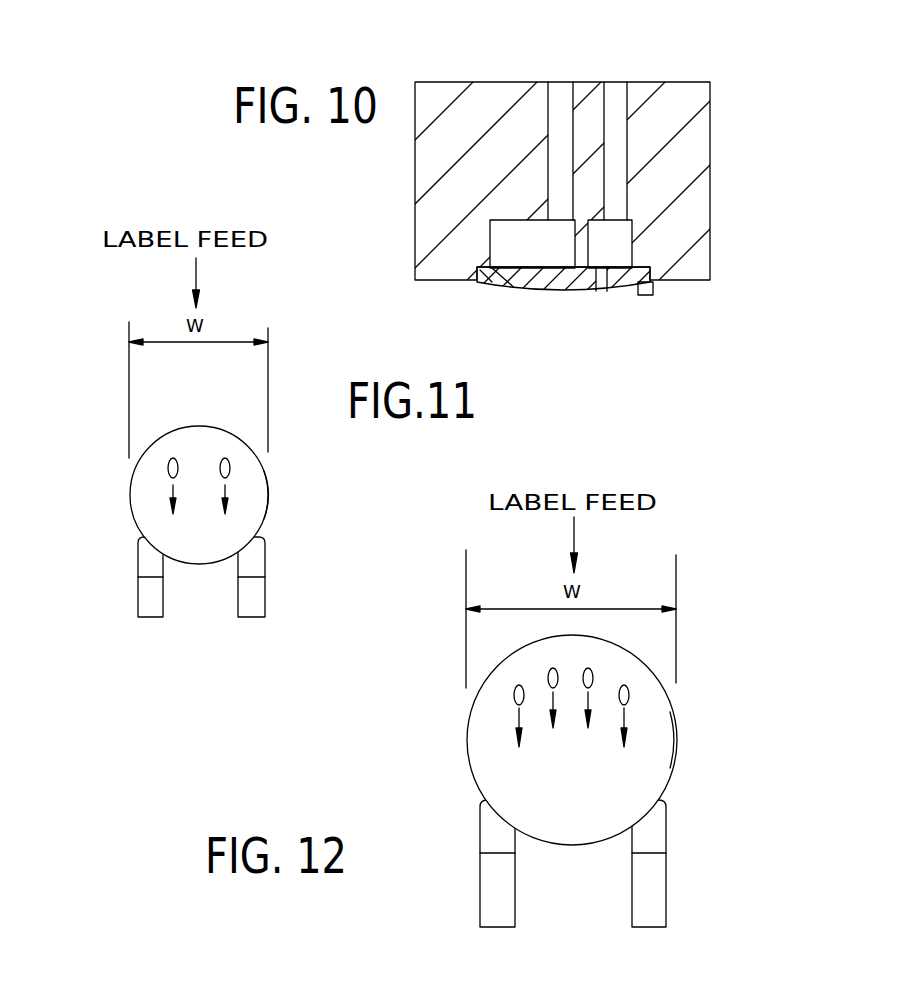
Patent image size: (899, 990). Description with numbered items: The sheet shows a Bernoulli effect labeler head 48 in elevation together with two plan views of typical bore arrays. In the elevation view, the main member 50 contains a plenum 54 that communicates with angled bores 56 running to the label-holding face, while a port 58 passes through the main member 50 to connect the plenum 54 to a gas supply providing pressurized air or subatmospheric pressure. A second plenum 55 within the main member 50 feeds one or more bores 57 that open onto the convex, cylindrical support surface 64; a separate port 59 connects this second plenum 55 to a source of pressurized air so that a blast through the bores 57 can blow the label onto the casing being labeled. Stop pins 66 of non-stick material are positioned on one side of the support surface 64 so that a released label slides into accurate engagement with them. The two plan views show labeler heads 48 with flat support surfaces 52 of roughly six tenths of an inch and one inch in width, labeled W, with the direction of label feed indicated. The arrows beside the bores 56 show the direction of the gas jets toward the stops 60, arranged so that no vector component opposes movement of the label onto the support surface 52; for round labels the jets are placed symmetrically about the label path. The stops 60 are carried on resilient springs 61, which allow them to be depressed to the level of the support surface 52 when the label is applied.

In FIG. 10, the labeler head 48 is at (461, 65).
In FIG. 11, the labeler head 48 is at (90, 507).
In FIG. 12, the labeler head 48 is at (440, 778).
In FIG. 10, the main member 50 is at (692, 82).
In FIG. 11, the main member 50 is at (268, 484).
In FIG. 12, the main member 50 is at (677, 719).
In FIG. 11, the support surface 52 is at (253, 510).
In FIG. 12, the support surface 52 is at (658, 763).
In FIG. 10, the plenum 54 is at (538, 256).
In FIG. 10, the second plenum 55 is at (626, 256).
In FIG. 10, the bores 56 is at (494, 283).
In FIG. 11, the bores 56 is at (168, 460).
In FIG. 12, the bores 56 is at (549, 679).
In FIG. 10, the bores 57 is at (602, 288).
In FIG. 10, the port 58 is at (564, 90).
In FIG. 10, the port 59 is at (617, 93).
In FIG. 11, the stops 60 is at (140, 558).
In FIG. 12, the stops 60 is at (488, 814).
In FIG. 11, the resilient springs 61 is at (143, 605).
In FIG. 12, the resilient springs 61 is at (490, 890).
In FIG. 10, the support surface 64 is at (554, 290).
In FIG. 10, the stop pins 66 is at (655, 288).